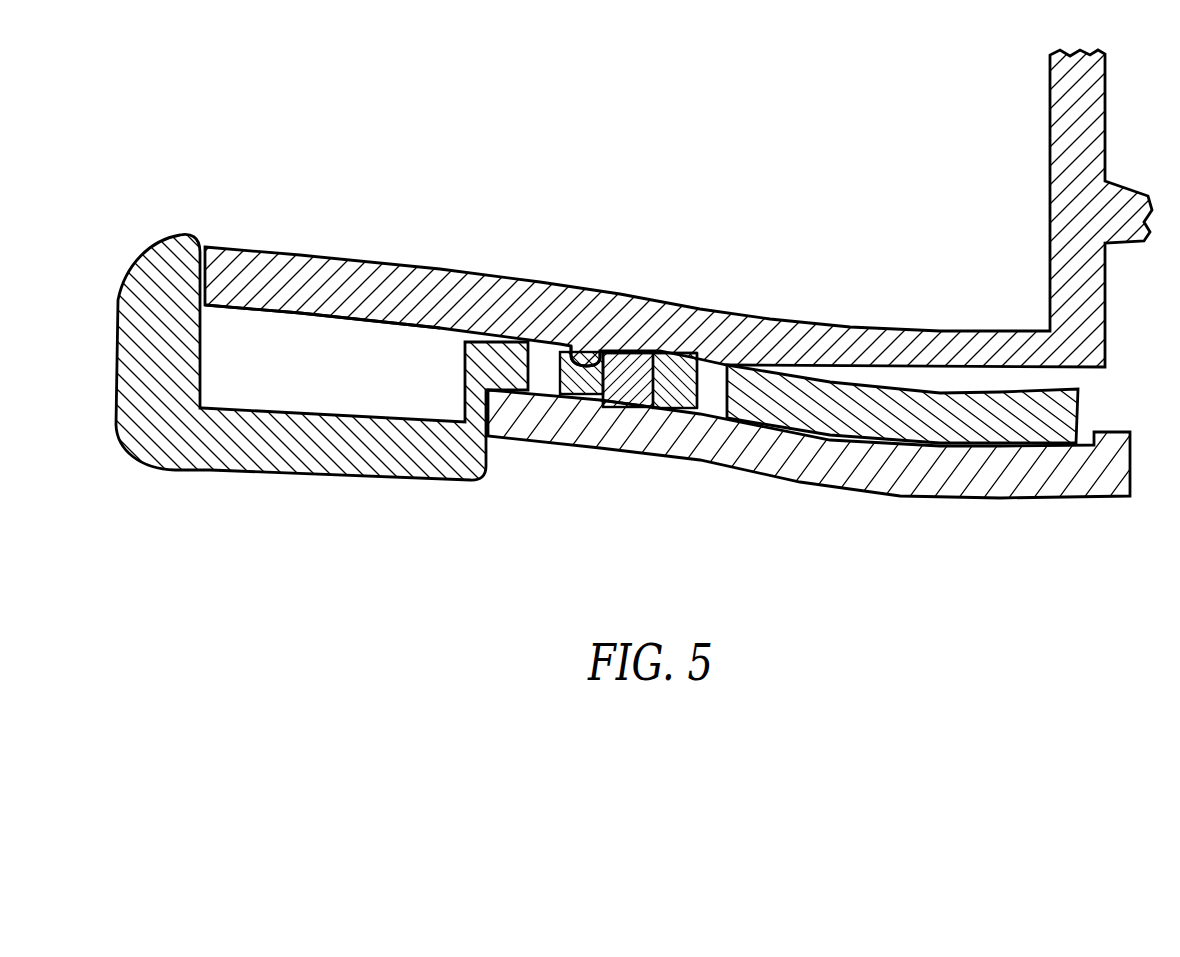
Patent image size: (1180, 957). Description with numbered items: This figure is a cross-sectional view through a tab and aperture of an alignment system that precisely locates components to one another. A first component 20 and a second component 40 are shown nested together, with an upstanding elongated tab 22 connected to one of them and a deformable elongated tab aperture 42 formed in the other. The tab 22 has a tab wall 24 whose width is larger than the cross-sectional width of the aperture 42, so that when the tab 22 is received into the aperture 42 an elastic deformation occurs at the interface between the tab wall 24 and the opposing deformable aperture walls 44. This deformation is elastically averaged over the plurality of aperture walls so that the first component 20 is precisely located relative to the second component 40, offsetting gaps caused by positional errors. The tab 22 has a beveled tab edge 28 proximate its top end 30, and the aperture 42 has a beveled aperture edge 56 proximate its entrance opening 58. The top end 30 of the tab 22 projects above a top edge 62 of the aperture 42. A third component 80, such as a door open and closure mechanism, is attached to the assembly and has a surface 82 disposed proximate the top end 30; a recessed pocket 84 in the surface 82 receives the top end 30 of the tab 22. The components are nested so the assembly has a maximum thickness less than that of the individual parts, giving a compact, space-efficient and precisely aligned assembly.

The first component 20 is at (975, 502).
The elongated tab 22 is at (664, 364).
The tab wall 24 is at (638, 360).
The beveled tab edge 28 is at (605, 347).
The top end 30 is at (625, 343).
The second component 40 is at (936, 385).
The deformable elongated tab aperture 42 is at (612, 395).
The deformable aperture wall 44 is at (635, 393).
The beveled aperture edge 56 is at (620, 383).
The entrance opening 58 is at (655, 405).
The top edge 62 is at (668, 352).
The third component 80 is at (295, 255).
The surface 82 is at (296, 317).
The recessed pocket 84 is at (567, 347).